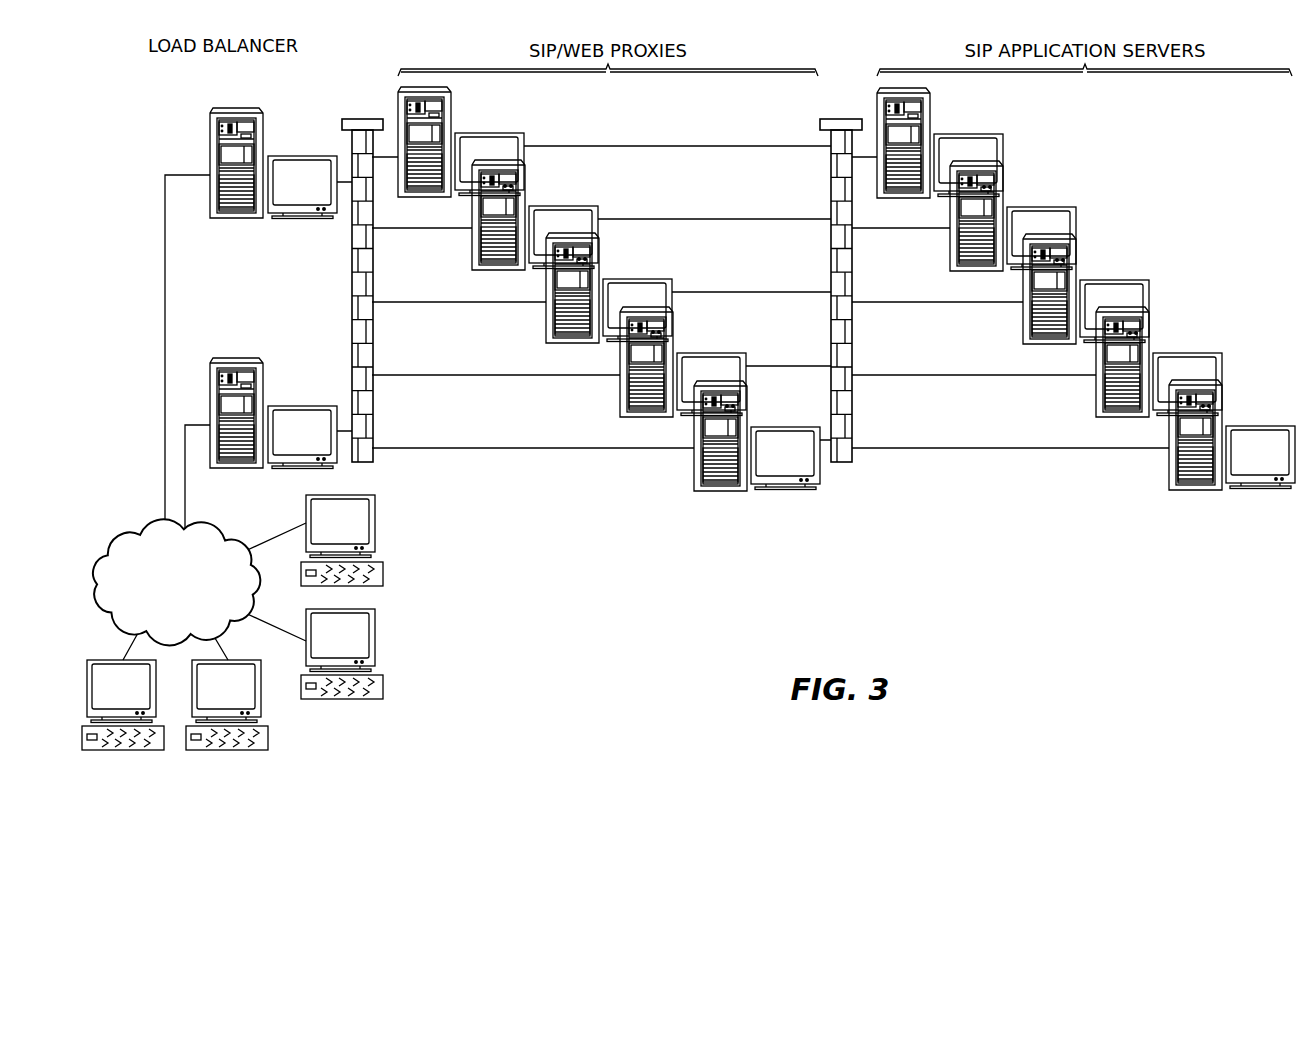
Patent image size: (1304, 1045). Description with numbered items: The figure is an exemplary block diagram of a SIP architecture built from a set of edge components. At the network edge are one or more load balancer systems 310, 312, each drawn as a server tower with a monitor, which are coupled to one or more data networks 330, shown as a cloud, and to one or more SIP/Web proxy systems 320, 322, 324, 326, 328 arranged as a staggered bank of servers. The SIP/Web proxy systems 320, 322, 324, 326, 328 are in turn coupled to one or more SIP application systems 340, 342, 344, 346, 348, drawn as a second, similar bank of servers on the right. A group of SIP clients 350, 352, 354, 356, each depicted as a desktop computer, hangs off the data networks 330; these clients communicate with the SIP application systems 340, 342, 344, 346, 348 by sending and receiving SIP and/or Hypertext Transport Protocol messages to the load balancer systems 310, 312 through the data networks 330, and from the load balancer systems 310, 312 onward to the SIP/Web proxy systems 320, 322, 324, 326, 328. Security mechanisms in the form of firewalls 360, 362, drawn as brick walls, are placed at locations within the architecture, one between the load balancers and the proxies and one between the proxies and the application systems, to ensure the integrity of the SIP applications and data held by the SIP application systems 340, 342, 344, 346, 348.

The load balancer system 310 is at (237, 108).
The load balancer system 312 is at (237, 358).
The SIP/Web proxy system 320 is at (487, 133).
The SIP/Web proxy system 322 is at (561, 206).
The SIP/Web proxy system 324 is at (635, 279).
The SIP/Web proxy system 326 is at (709, 353).
The SIP/Web proxy system 328 is at (781, 427).
The data network 330 is at (142, 530).
The SIP application system 340 is at (966, 134).
The SIP application system 342 is at (1040, 207).
The SIP application system 344 is at (1113, 280).
The SIP application system 346 is at (1186, 353).
The SIP application system 348 is at (1258, 492).
The SIP client 350 is at (120, 750).
The SIP client 352 is at (226, 750).
The SIP client 354 is at (343, 700).
The SIP client 356 is at (383, 573).
The firewall 360 is at (361, 119).
The firewall 362 is at (841, 462).